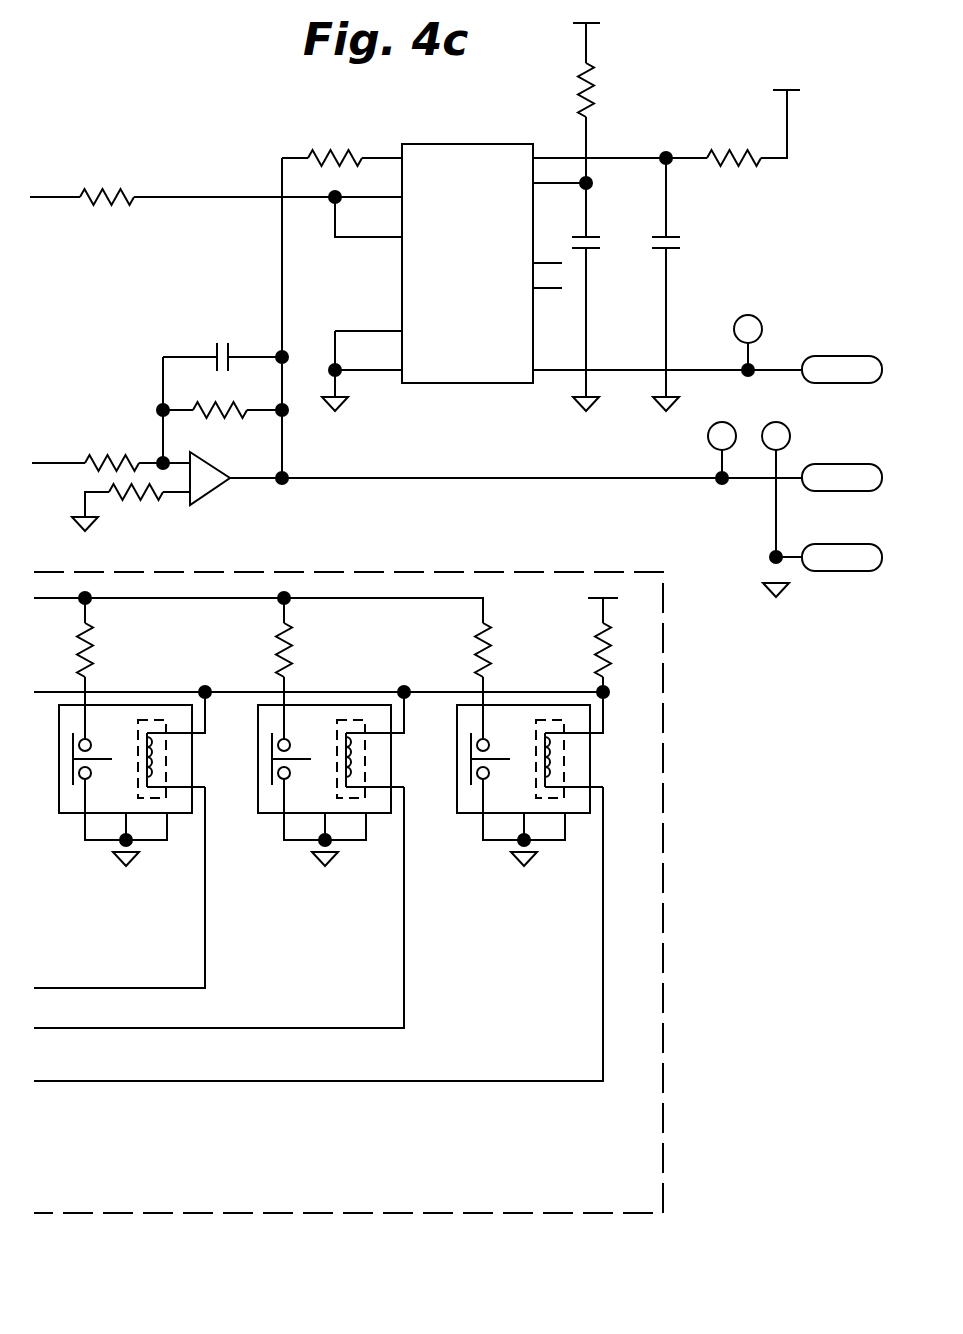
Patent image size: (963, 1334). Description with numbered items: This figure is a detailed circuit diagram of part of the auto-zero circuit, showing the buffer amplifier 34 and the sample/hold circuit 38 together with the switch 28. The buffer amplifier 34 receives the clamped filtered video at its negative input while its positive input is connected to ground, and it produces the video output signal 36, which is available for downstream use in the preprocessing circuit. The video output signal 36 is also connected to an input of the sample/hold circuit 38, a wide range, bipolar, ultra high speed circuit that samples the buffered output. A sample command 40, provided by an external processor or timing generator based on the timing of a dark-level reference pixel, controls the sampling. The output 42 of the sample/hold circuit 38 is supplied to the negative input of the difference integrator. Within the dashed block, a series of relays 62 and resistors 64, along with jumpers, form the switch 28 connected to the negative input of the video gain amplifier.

The switch 28 is at (672, 797).
The buffer amplifier 34 is at (208, 500).
The video output signal 36 is at (257, 480).
The sample/hold circuit 38 is at (461, 143).
The sample command 40 is at (698, 362).
The output of sample/hold circuit 42 is at (205, 195).
The relay 62 is at (110, 852).
The resistor 64 is at (98, 657).